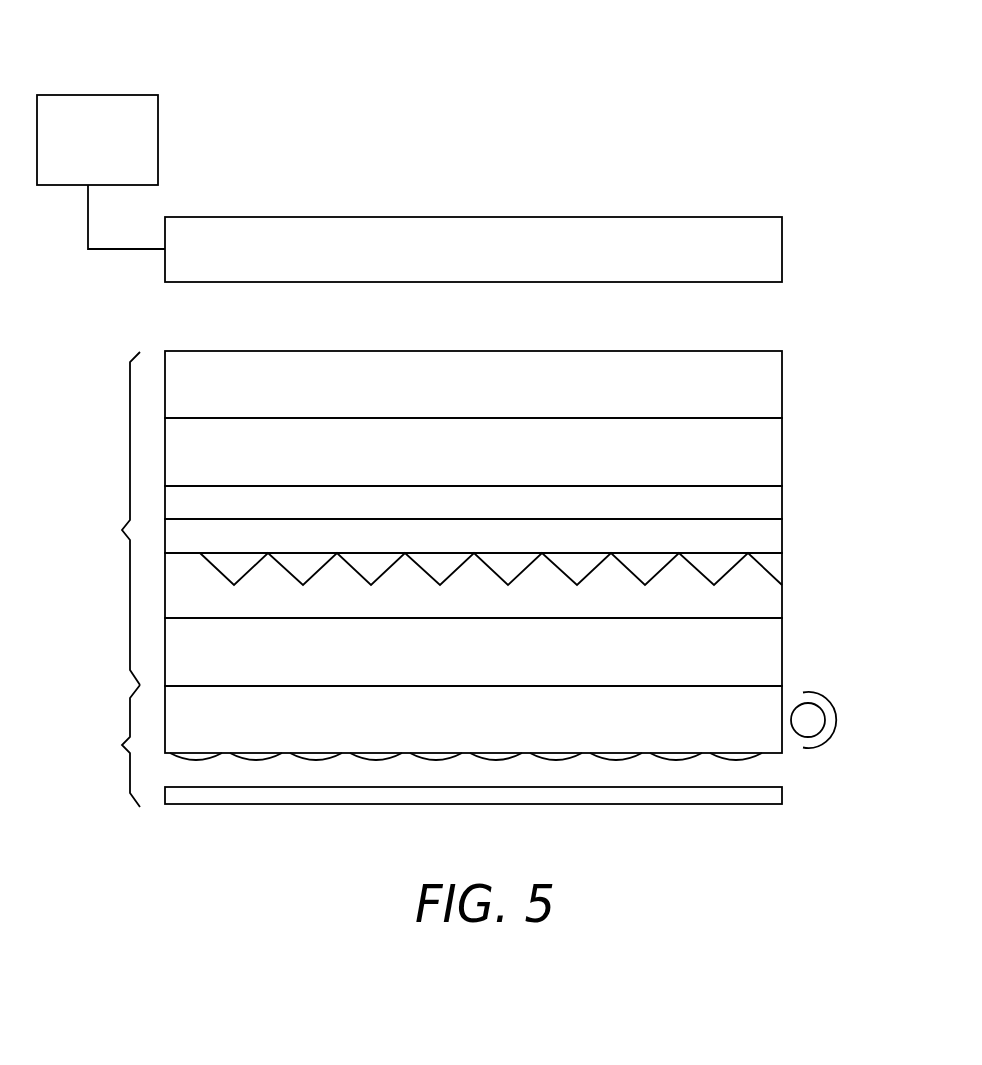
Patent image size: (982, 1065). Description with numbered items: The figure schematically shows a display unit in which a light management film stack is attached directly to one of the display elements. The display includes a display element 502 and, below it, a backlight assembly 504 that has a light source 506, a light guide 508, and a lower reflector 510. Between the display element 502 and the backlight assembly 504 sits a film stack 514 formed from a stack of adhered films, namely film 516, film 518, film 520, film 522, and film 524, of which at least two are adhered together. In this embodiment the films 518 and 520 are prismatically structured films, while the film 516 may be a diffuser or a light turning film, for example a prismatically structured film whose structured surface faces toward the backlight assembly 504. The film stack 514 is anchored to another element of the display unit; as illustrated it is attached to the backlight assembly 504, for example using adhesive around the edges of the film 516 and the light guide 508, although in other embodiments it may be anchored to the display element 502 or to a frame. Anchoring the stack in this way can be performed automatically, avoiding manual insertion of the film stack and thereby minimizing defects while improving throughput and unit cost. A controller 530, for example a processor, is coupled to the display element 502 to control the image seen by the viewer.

The display element 502 is at (782, 245).
The backlight assembly 504 is at (106, 746).
The light source 506 is at (826, 705).
The light guide 508 is at (782, 693).
The lower reflector 510 is at (218, 804).
The film stack 514 is at (106, 518).
The film 516 is at (782, 648).
The prismatically structured film 518 is at (782, 593).
The prismatically structured film 520 is at (782, 495).
The film 522 is at (782, 440).
The film 524 is at (782, 378).
The controller 530 is at (91, 95).